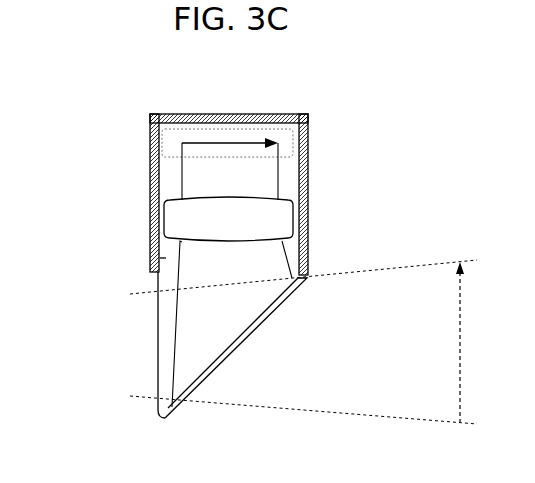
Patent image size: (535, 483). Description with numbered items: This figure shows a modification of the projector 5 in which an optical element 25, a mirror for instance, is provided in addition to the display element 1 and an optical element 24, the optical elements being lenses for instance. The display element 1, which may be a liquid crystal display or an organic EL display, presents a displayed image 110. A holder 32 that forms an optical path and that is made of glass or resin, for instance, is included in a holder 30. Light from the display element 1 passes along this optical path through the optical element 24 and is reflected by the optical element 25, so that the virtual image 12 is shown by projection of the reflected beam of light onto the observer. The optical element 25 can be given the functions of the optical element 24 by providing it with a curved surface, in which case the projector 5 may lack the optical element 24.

The projector 5 is at (106, 134).
The display element 1 is at (207, 134).
The displayed image 110 is at (247, 143).
The holder 30 is at (150, 205).
The holder 32 is at (150, 258).
The optical element 24 is at (288, 227).
The optical element 25 is at (258, 322).
The virtual image 12 is at (458, 363).